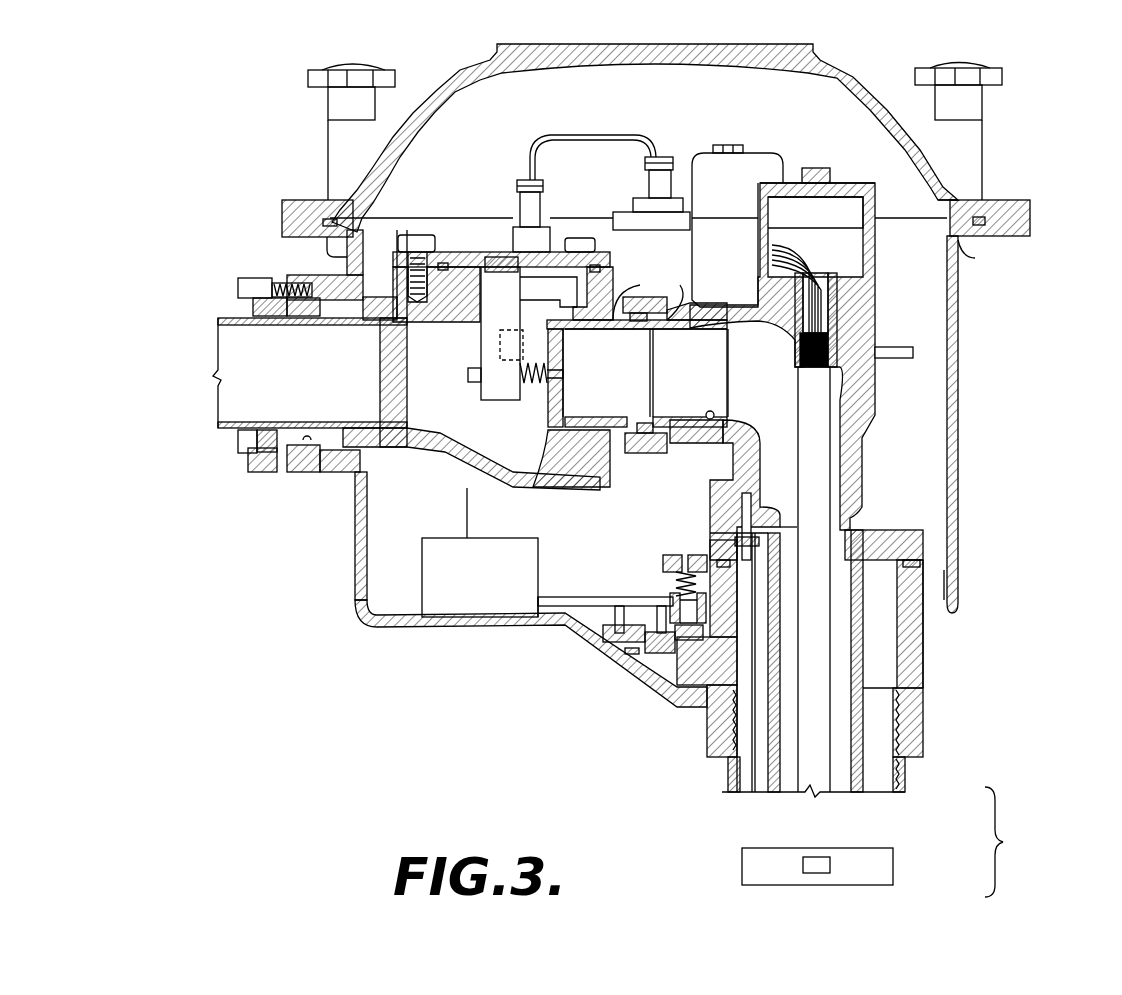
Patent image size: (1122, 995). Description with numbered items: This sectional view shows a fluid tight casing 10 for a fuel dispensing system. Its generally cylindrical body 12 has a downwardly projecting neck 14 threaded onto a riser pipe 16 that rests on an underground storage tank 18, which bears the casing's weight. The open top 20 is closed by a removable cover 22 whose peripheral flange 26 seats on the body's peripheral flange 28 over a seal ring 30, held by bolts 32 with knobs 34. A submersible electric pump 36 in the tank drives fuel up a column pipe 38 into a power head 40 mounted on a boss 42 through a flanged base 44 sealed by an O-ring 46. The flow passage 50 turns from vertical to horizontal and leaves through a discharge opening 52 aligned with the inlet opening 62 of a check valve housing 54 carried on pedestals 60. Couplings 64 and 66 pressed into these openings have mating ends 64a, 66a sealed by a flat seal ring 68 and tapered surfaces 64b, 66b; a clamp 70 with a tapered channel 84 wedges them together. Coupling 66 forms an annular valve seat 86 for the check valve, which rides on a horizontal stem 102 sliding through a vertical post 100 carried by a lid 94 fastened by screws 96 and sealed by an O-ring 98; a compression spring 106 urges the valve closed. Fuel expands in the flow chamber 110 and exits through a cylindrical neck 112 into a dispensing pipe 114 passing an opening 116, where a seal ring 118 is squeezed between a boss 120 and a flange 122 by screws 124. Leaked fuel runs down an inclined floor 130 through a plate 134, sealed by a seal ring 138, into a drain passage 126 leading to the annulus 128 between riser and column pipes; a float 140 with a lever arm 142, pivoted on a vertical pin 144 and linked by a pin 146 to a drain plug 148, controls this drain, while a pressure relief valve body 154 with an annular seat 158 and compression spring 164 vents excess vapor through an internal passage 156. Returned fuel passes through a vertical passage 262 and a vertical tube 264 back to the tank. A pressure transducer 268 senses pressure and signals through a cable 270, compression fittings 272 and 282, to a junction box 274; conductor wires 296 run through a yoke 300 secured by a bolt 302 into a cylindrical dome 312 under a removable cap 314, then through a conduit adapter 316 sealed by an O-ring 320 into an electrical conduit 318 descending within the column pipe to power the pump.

The fluid tight casing 10 is at (1002, 344).
The casing body 12 is at (958, 430).
The neck 14 is at (923, 693).
The riser pipe 16 is at (903, 773).
The underground storage tank 18 is at (880, 870).
The open top 20 is at (965, 195).
The cover 22 is at (835, 73).
The peripheral flange of cover 26 is at (1020, 212).
The peripheral flange of body 28 is at (1012, 238).
The seal ring 30 is at (985, 228).
The bolts 32 is at (333, 118).
The handles or knobs 34 is at (325, 80).
The submersible electric pump 36 is at (817, 865).
The column pipe 38 is at (857, 650).
The power head 40 is at (868, 388).
The boss 42 is at (923, 587).
The flanged base 44 is at (923, 513).
The O-ring 46 is at (920, 563).
The flow passage 50 is at (783, 416).
The discharge opening 52 is at (718, 443).
The check valve housing 54 is at (560, 487).
The pedestals 60 is at (440, 493).
The inlet opening 62 is at (628, 489).
The coupling 64 is at (697, 327).
The mating end 64a is at (668, 330).
The tapered surface 64b is at (680, 322).
The coupling 66 is at (585, 330).
The mating end 66a is at (637, 330).
The tapered surface 66b is at (616, 322).
The flat seal ring 68 is at (657, 428).
The clamp 70 is at (620, 313).
The tapered channel 84 is at (668, 447).
The annular valve seat 86 is at (550, 322).
The lid 94 is at (450, 253).
The screws 96 is at (417, 240).
The O-ring 98 is at (440, 265).
The vertical post 100 is at (481, 310).
The horizontal stem 102 is at (466, 370).
The compression spring 106 is at (533, 380).
The flow chamber 110 is at (452, 433).
The cylindrical neck 112 is at (375, 433).
The dispensing pipe 114 is at (217, 425).
The opening 116 is at (313, 445).
The seal ring 118 is at (262, 302).
The boss 120 is at (292, 473).
The flange 122 is at (250, 460).
The screws 124 is at (267, 280).
The drain passage 126 is at (692, 722).
The annulus 128 is at (760, 785).
The inclined floor 130 is at (472, 632).
The plate 134 is at (607, 653).
The seal ring 138 is at (633, 648).
The float 140 is at (467, 540).
The lever arm 142 is at (548, 597).
The vertical pin 144 is at (610, 617).
The pin 146 is at (660, 620).
The drain plug 148 is at (667, 650).
The pressure relief valve body 154 is at (667, 557).
The internal passage 156 is at (704, 612).
The annular seat 158 is at (702, 560).
The compression spring 164 is at (677, 573).
The vertical passage 262 is at (745, 510).
The vertical tube 264 is at (727, 775).
The pressure transducer 268 is at (513, 237).
The cable 270 is at (598, 137).
The compression fitting 272 is at (520, 203).
The junction box 274 is at (592, 215).
The compression fitting 282 is at (672, 172).
The electrical conductor wires 296 is at (803, 260).
The yoke 300 is at (755, 168).
The bolt 302 is at (718, 147).
The cylindrical dome 312 is at (762, 213).
The removable cap 314 is at (838, 183).
The conduit adapter 316 is at (845, 302).
The electrical conduit 318 is at (812, 433).
The O-ring 320 is at (767, 327).